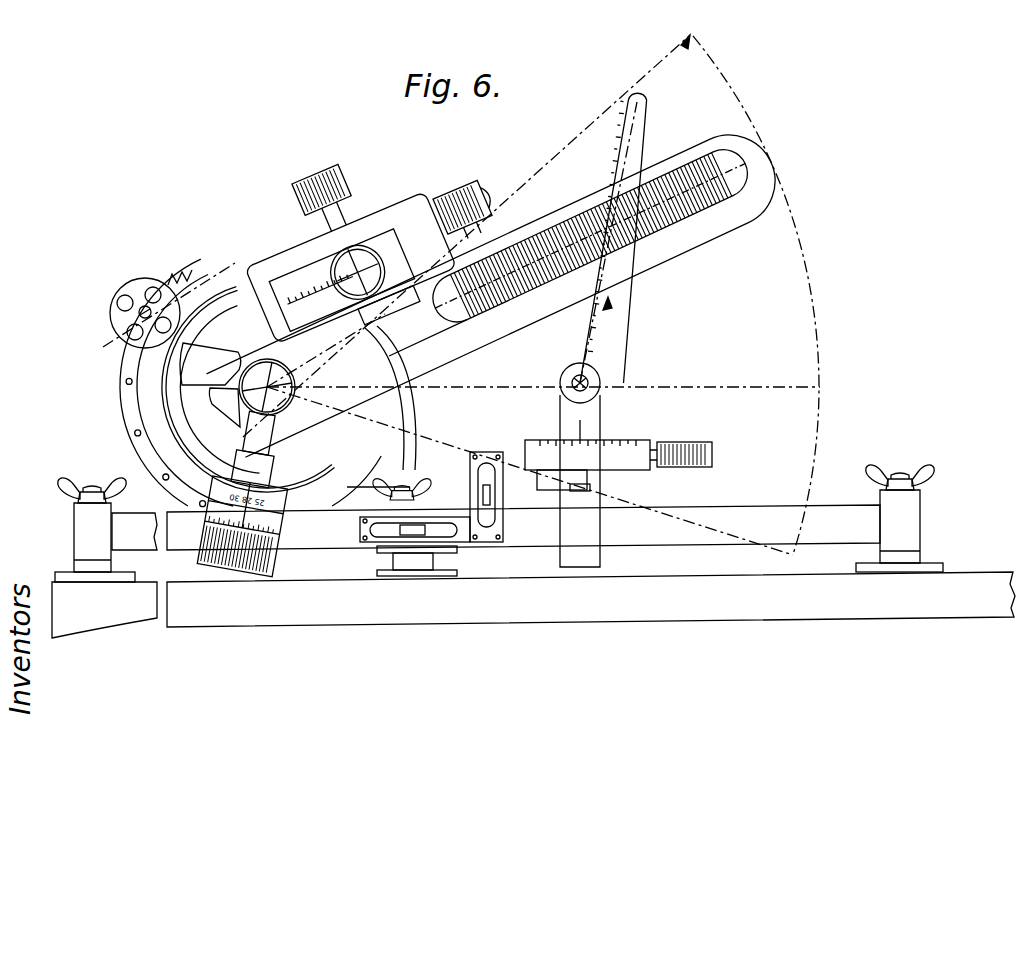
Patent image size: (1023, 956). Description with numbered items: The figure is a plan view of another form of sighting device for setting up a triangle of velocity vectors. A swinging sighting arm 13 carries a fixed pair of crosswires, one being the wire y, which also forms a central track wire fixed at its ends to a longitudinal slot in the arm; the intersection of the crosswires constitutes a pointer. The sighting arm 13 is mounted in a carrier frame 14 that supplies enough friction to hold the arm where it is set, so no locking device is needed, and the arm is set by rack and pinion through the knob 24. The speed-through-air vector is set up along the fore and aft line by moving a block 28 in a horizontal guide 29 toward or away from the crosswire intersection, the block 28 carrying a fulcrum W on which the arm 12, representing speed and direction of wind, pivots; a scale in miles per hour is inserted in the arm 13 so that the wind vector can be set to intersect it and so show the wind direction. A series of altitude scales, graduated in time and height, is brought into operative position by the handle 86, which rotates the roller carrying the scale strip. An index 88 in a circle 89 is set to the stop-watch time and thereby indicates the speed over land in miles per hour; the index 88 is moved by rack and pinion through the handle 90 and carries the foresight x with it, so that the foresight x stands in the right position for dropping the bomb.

The arm 12 is at (631, 293).
The swinging sighting arm 13 is at (543, 216).
The carrier frame 14 is at (122, 410).
The knob 24 is at (114, 327).
The block 28 is at (604, 444).
The horizontal guide 29 is at (640, 470).
The handle 86 is at (473, 180).
The index 88 is at (343, 257).
The circle 89 is at (350, 246).
The handle 90 is at (337, 170).
The fulcrum W is at (602, 386).
The foresight x is at (405, 387).
The crosswire y is at (449, 320).